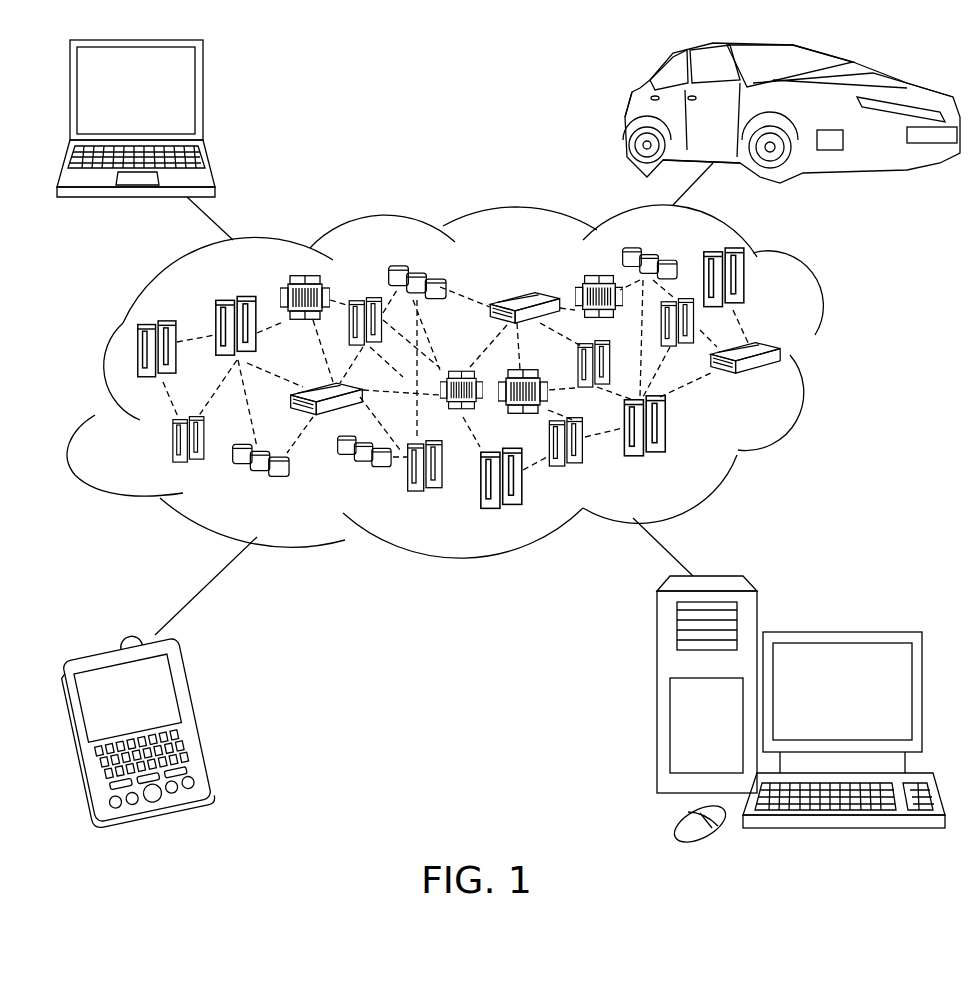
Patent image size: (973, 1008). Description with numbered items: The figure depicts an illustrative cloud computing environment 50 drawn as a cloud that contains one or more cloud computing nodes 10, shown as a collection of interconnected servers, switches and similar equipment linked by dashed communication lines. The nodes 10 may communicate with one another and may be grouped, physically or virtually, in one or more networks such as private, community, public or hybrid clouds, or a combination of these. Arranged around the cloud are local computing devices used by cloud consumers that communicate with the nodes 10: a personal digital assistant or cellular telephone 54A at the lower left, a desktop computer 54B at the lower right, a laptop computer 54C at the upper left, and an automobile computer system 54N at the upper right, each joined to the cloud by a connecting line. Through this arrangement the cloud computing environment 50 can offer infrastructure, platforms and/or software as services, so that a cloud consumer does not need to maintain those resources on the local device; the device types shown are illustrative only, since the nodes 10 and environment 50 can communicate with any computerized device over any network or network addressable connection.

The laptop computer 54C is at (203, 98).
The automobile computer system 54N is at (627, 113).
The cloud computing environment 50 is at (843, 357).
The cloud computing node 10 is at (788, 388).
The personal digital assistant or cellular telephone 54A is at (190, 720).
The desktop computer 54B is at (840, 632).